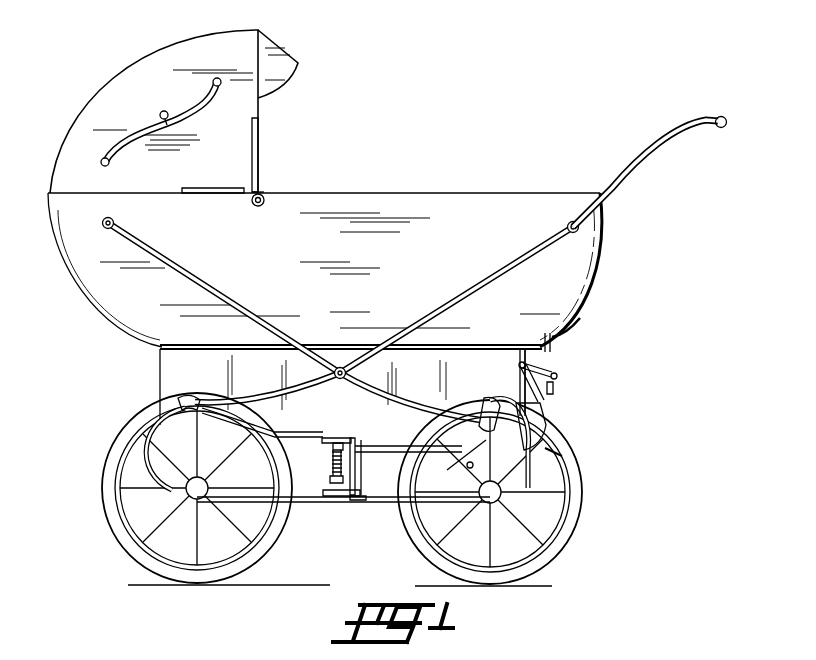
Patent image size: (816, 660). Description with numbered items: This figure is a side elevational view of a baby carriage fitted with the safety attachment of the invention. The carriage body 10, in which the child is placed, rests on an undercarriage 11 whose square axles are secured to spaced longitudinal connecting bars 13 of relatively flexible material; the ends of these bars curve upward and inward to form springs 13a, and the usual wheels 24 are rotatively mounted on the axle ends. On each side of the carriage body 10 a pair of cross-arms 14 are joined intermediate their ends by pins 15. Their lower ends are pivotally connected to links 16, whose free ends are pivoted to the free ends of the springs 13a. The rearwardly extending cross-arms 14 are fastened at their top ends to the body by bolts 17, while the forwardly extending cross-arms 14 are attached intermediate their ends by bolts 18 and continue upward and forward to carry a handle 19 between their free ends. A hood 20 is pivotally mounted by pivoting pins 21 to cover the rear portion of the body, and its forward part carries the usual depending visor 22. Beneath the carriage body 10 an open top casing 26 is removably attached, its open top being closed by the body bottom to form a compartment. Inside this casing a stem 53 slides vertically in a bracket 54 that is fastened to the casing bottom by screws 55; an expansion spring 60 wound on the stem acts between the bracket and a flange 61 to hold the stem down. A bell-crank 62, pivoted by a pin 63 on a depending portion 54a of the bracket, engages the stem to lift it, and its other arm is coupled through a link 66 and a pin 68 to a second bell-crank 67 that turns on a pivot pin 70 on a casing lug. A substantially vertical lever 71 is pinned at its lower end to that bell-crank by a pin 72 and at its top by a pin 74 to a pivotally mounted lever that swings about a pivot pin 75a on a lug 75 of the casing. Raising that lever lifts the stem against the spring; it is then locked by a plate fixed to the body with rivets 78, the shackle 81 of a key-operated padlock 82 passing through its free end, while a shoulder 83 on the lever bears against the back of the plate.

The carriage body 10 is at (92, 311).
The undercarriage 11 is at (92, 515).
The connecting bars 13 is at (312, 503).
The springs 13a is at (130, 462).
The cross-arms 14 is at (205, 290).
The pins 15 is at (344, 367).
The links 16 is at (184, 398).
The bolts 17 is at (114, 220).
The bolts 18 is at (567, 228).
The handle 19 is at (720, 116).
The hood 20 is at (146, 76).
The pivoting pins 21 is at (263, 194).
The visor 22 is at (287, 63).
The wheels 24 is at (130, 546).
The casing 26 is at (157, 366).
The stem 53 is at (331, 464).
The bracket 54 is at (331, 439).
The depending portion 54a is at (368, 503).
The screws 55 is at (318, 434).
The expansion spring 60 is at (332, 448).
The flange 61 is at (330, 481).
The bell-crank 62 is at (362, 478).
The pin 63 is at (345, 498).
The link 66 is at (455, 459).
The bell-crank 67 is at (356, 446).
The pin 68 is at (468, 469).
The pivot pin 70 is at (558, 453).
The lever 71 is at (542, 402).
The pin 72 is at (544, 430).
The pin 74 is at (558, 332).
The lug 75 is at (525, 345).
The pivot pin 75a is at (519, 366).
The rivets 78 is at (576, 324).
The shackle 81 is at (558, 377).
The padlock 82 is at (556, 390).
The shoulder 83 is at (552, 370).